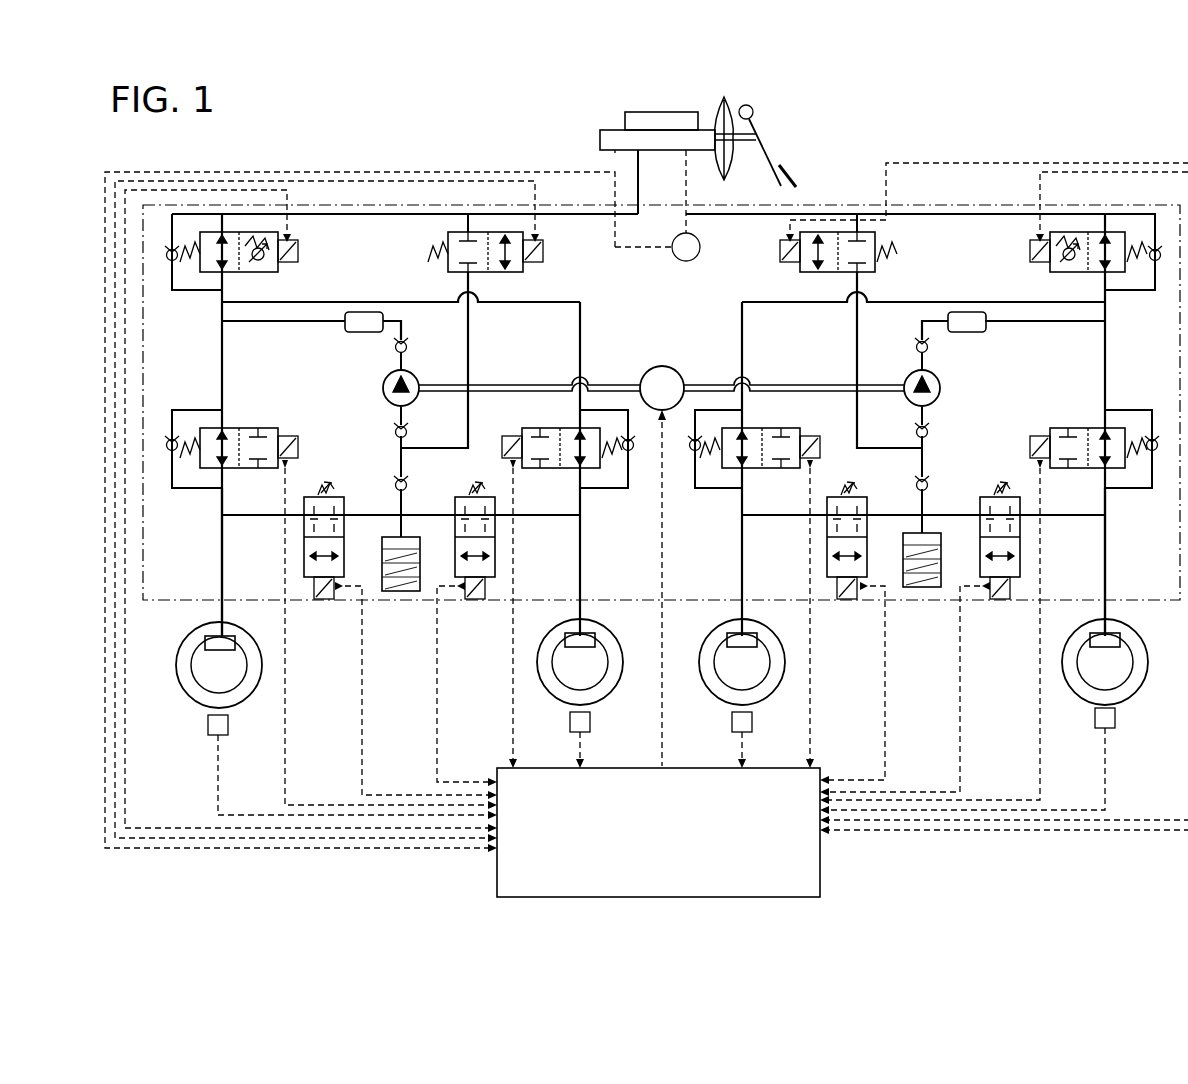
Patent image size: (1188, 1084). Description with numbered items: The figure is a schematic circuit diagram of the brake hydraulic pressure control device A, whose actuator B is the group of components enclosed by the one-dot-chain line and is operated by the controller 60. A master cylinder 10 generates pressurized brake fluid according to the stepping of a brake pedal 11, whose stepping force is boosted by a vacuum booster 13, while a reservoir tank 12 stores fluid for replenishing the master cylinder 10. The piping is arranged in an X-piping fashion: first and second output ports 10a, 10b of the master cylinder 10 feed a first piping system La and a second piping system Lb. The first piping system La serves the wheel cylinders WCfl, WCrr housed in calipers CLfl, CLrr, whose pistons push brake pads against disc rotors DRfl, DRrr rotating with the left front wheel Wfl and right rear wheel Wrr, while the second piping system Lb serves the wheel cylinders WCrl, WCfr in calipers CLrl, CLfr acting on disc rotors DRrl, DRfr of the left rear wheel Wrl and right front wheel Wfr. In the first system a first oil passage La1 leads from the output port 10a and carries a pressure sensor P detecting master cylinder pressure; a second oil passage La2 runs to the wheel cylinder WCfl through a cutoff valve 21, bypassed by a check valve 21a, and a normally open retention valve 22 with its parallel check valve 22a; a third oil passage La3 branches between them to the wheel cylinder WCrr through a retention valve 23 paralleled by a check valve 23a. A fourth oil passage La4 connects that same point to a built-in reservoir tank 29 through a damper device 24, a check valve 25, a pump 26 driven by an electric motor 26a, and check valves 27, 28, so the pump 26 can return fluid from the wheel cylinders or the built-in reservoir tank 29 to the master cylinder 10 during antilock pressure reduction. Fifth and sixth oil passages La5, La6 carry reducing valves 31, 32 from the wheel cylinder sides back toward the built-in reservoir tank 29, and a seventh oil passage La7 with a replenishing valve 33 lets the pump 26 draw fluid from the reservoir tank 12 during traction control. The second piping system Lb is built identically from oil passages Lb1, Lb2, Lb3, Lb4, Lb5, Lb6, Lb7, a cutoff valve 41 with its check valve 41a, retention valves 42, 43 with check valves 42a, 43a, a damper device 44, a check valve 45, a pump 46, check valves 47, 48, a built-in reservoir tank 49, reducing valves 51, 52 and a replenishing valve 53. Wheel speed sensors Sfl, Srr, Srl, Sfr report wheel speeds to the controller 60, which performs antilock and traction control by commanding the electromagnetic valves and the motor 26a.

The master cylinder 10 is at (600, 141).
The first output port 10a is at (686, 150).
The second output port 10b is at (632, 150).
The brake pedal 11 is at (774, 160).
The reservoir tank 12 is at (625, 122).
The vacuum booster 13 is at (720, 106).
The cutoff valve 21 is at (1092, 272).
The check valve 21a is at (1156, 268).
The retention valve 22 is at (1072, 428).
The check valve 22a is at (1153, 428).
The retention valve 23 is at (760, 428).
The check valve 23a is at (691, 466).
The damper device 24 is at (948, 316).
The check valve 25 is at (915, 345).
The pump 26 is at (936, 380).
The electric motor 26a is at (641, 374).
The check valve 27 is at (930, 432).
The check valve 28 is at (930, 486).
The built-in reservoir tank 29 is at (922, 588).
The reducing valve 31 is at (1004, 582).
The reducing valve 32 is at (846, 582).
The replenishing valve 33 is at (835, 272).
The cutoff valve 41 is at (236, 272).
The check valve 41a is at (170, 268).
The retention valve 42 is at (236, 428).
The check valve 42a is at (168, 456).
The retention valve 43 is at (548, 428).
The check valve 43a is at (634, 466).
The damper device 44 is at (383, 316).
The check valve 45 is at (408, 345).
The pump 46 is at (385, 382).
The check valve 47 is at (393, 432).
The check valve 48 is at (393, 486).
The built-in reservoir tank 49 is at (400, 592).
The reducing valve 51 is at (318, 582).
The reducing valve 52 is at (478, 582).
The replenishing valve 53 is at (486, 272).
The controller 60 is at (705, 767).
The brake hydraulic pressure control device A is at (513, 130).
The actuator B is at (828, 190).
The pressure sensor P is at (686, 247).
The first piping system La is at (1117, 382).
The first oil passage La1 is at (925, 212).
The second oil passage La2 is at (1107, 548).
The third oil passage La3 is at (756, 345).
The fourth oil passage La4 is at (1018, 321).
The fifth oil passage La5 is at (1066, 517).
The sixth oil passage La6 is at (770, 517).
The seventh oil passage La7 is at (857, 340).
The second piping system Lb is at (206, 384).
The first oil passage Lb1 is at (395, 214).
The second oil passage Lb2 is at (222, 548).
The third oil passage Lb3 is at (580, 360).
The fourth oil passage Lb4 is at (308, 321).
The fifth oil passage Lb5 is at (248, 517).
The sixth oil passage Lb6 is at (545, 517).
The seventh oil passage Lb7 is at (468, 340).
The wheel cylinder WCfr is at (212, 636).
The wheel cylinder WCrl is at (573, 633).
The wheel cylinder WCrr is at (735, 633).
The wheel cylinder WCfl is at (1097, 633).
The caliper CLfr is at (230, 636).
The caliper CLrl is at (590, 633).
The caliper CLrr is at (752, 633).
The caliper CLfl is at (1114, 633).
The disc rotor DRfr is at (219, 667).
The disc rotor DRrl is at (580, 664).
The disc rotor DRrr is at (742, 664).
The disc rotor DRfl is at (1104, 664).
The wheel Wfr is at (181, 672).
The wheel Wrl is at (540, 668).
The wheel Wrr is at (702, 668).
The wheel Wfl is at (1066, 668).
The wheel speed sensor Sfr is at (228, 727).
The wheel speed sensor Srl is at (590, 723).
The wheel speed sensor Srr is at (752, 723).
The wheel speed sensor Sfl is at (1115, 719).